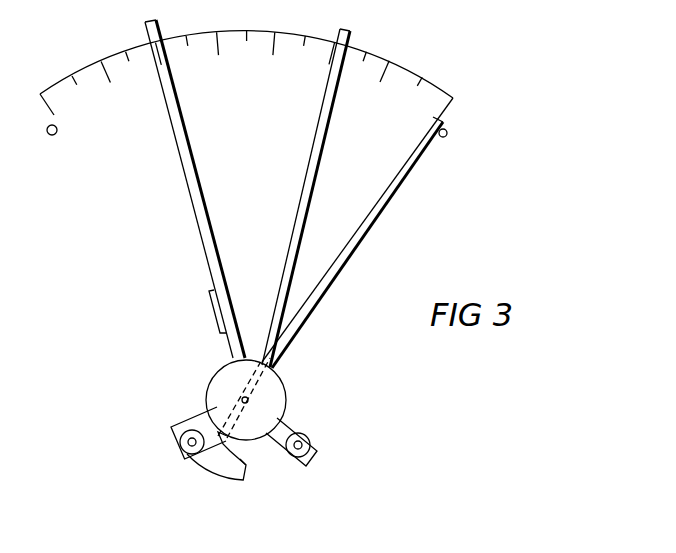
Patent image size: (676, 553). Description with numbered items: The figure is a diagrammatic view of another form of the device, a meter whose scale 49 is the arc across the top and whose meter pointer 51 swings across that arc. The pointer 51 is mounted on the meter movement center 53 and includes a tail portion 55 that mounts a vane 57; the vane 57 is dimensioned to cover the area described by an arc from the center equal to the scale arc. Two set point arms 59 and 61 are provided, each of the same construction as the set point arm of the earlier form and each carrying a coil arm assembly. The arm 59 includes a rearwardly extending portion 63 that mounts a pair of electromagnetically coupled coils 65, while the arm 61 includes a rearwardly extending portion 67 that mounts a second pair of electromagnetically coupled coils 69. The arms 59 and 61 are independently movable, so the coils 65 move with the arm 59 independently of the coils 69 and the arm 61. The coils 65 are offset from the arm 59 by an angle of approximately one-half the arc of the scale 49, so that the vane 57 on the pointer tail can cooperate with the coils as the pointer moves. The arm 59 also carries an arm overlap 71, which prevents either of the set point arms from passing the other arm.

The scale 49 is at (412, 72).
The meter pointer 51 is at (398, 195).
The meter movement center 53 is at (250, 398).
The tail portion 55 is at (243, 458).
The vane 57 is at (228, 470).
The set point arm 59 is at (192, 205).
The set point arm 61 is at (287, 245).
The rearwardly extending portion 63 is at (283, 425).
The electromagnetically coupled coils 65 is at (318, 440).
The rearwardly extending portion 67 is at (213, 422).
The electromagnetically coupled coils 69 is at (193, 470).
The arm overlap 71 is at (208, 298).